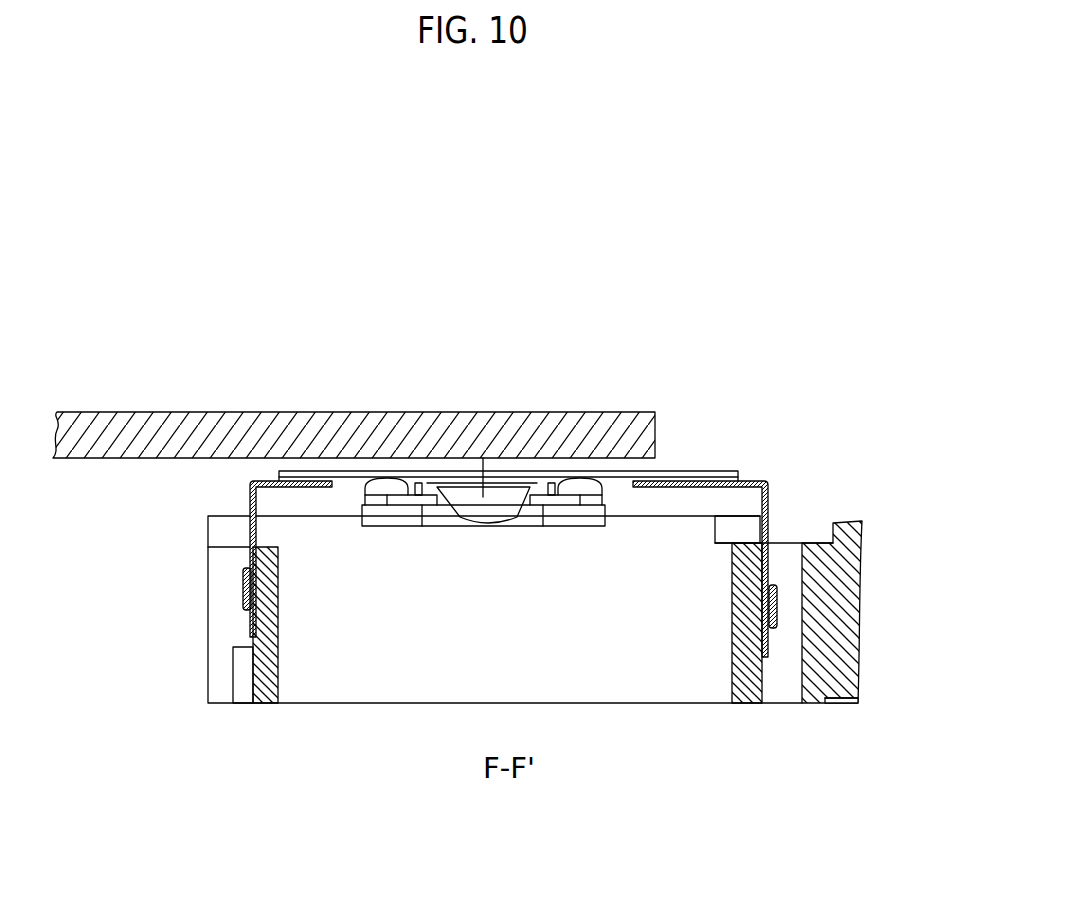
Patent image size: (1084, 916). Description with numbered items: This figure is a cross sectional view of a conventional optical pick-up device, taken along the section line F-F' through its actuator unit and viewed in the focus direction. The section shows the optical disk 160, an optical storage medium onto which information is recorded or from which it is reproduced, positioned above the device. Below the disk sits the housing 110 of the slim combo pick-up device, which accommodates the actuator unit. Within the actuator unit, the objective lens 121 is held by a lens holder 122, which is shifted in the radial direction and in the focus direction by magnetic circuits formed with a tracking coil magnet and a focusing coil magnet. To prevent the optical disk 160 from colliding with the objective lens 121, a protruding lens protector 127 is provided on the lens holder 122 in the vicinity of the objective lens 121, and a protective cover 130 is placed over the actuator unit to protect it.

The housing 110 is at (838, 614).
The objective lens 121 is at (453, 495).
The lens holder 122 is at (404, 497).
The lens protector 127 is at (386, 478).
The protective cover 130 is at (686, 478).
The optical disk 160 is at (228, 437).